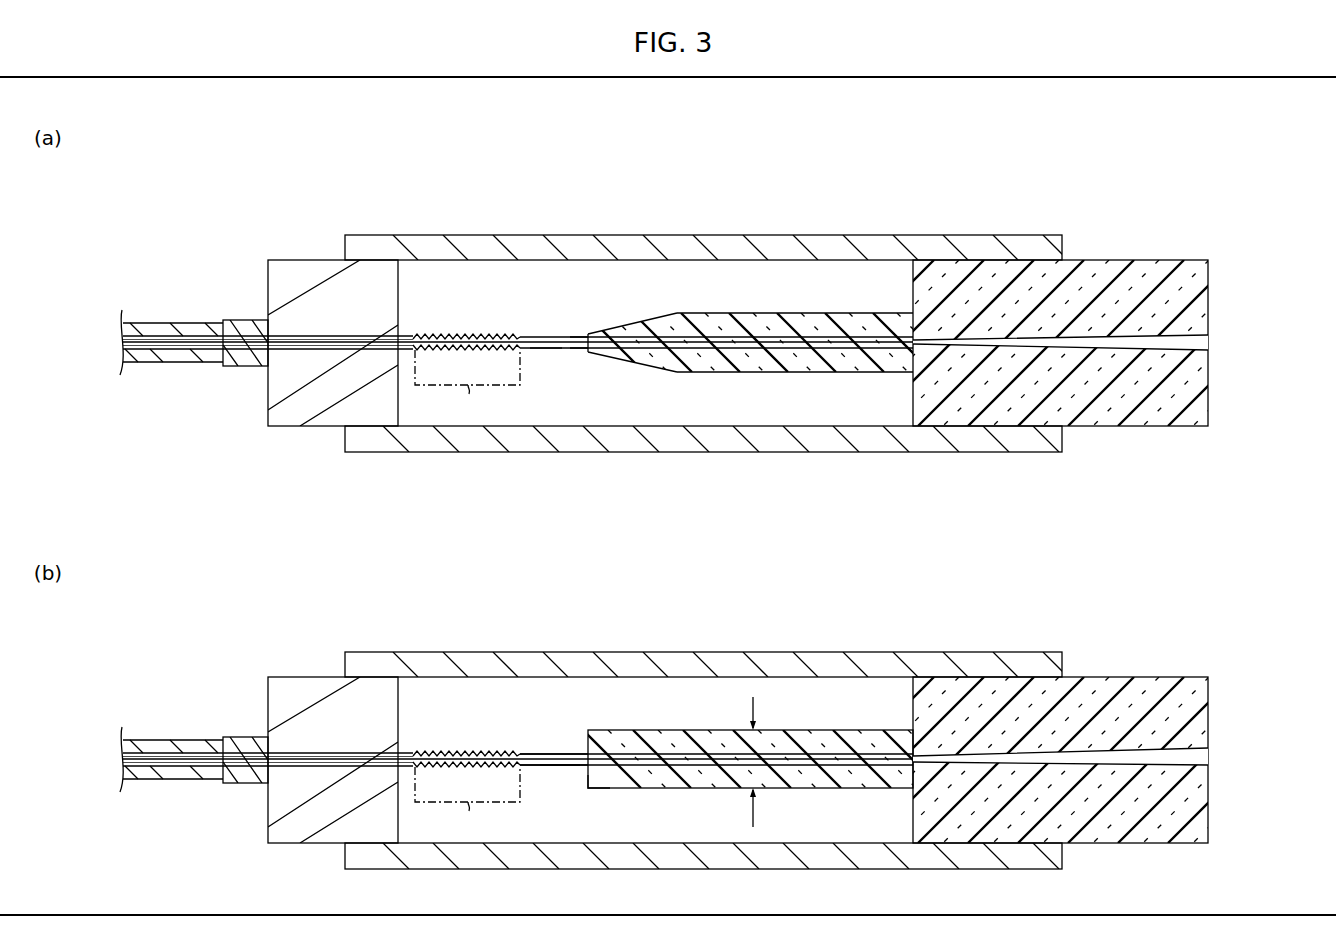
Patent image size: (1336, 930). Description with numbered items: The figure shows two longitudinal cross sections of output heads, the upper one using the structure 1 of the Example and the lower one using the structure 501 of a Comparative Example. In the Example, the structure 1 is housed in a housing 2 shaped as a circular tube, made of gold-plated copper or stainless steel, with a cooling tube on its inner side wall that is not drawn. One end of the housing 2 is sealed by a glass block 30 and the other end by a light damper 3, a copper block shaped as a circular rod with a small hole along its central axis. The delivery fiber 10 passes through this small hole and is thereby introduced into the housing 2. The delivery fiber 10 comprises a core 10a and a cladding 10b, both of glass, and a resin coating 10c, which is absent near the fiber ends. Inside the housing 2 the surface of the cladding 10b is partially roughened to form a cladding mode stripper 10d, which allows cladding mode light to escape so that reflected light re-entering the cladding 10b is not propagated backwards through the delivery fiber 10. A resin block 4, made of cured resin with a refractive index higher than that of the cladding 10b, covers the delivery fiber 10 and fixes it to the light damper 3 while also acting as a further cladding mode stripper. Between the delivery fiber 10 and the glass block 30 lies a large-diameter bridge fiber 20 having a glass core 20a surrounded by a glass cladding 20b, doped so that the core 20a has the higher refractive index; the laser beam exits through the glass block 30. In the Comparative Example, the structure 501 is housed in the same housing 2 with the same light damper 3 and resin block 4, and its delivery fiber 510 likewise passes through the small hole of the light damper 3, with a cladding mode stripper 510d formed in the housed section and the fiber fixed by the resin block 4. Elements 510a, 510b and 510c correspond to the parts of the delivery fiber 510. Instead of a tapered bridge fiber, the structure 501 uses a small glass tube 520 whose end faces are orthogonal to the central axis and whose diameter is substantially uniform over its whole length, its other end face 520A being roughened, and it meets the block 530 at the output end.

The structure 1 is at (728, 317).
The housing 2 is at (860, 235).
The light damper 3 is at (300, 260).
The resin block 4 is at (240, 320).
The delivery fiber 10 is at (463, 318).
The core 10a is at (575, 336).
The cladding 10b is at (549, 350).
The coating 10c is at (177, 323).
The cladding mode stripper 10d is at (467, 386).
The bridge fiber 20 is at (770, 355).
The core 20a is at (678, 343).
The cladding 20b is at (745, 372).
The glass block 30 is at (1121, 260).
The structure 501 is at (728, 734).
The delivery fiber 510 is at (463, 735).
The optical fiber end portion 510a is at (531, 753).
The optical fiber cladding 510b is at (560, 766).
The optical fiber cable 510c is at (177, 740).
The cladding mode stripper 510d is at (467, 804).
The small glass tube 520 is at (771, 764).
The other end face 520A is at (589, 789).
The ferrule block 530 is at (1121, 678).